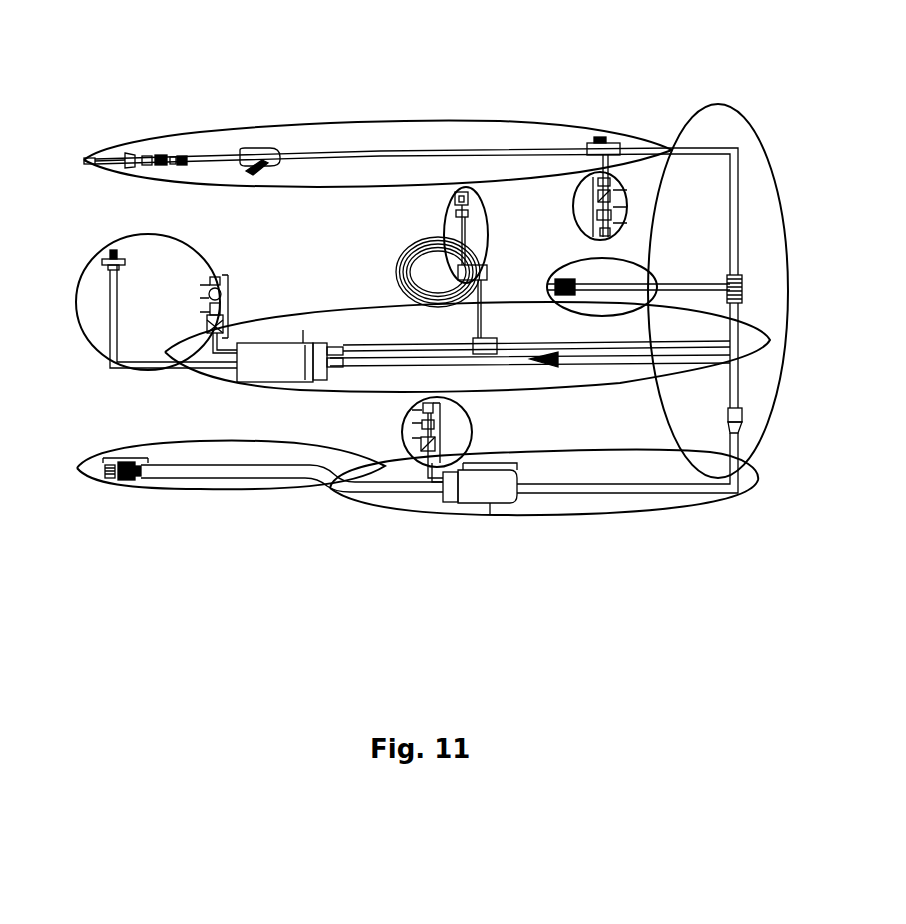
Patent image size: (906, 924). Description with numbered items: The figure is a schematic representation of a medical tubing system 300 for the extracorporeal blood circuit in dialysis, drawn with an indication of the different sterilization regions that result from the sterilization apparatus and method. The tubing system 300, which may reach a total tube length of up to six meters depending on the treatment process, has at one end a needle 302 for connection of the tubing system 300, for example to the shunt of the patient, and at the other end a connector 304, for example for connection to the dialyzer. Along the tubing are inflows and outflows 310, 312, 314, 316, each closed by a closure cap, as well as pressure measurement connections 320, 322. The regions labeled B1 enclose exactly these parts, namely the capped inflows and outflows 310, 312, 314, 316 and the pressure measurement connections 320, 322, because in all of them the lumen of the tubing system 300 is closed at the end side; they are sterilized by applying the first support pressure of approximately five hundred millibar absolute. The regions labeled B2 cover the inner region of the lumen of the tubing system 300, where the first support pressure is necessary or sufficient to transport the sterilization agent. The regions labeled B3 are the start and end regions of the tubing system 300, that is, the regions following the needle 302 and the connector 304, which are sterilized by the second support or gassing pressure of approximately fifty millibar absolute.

The tubing system 300 is at (162, 46).
The needle 302 is at (133, 172).
The connector 304 is at (122, 458).
The inflow or outflow 310 is at (230, 295).
The inflow or outflow 312 is at (452, 204).
The inflow or outflow 314 is at (573, 207).
The inflow or outflow 316 is at (448, 418).
The pressure measurement connection 320 is at (113, 250).
The pressure measurement connection 322 is at (557, 278).
The sterilization region B1 is at (77, 302).
The sterilization region B2 is at (632, 416).
The sterilization region B3 is at (347, 123).